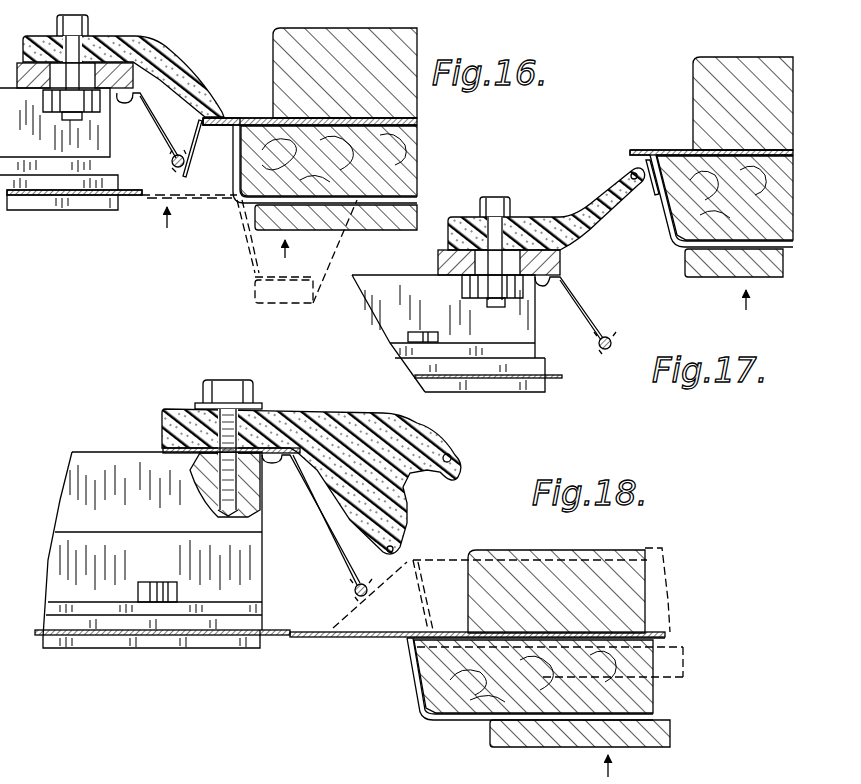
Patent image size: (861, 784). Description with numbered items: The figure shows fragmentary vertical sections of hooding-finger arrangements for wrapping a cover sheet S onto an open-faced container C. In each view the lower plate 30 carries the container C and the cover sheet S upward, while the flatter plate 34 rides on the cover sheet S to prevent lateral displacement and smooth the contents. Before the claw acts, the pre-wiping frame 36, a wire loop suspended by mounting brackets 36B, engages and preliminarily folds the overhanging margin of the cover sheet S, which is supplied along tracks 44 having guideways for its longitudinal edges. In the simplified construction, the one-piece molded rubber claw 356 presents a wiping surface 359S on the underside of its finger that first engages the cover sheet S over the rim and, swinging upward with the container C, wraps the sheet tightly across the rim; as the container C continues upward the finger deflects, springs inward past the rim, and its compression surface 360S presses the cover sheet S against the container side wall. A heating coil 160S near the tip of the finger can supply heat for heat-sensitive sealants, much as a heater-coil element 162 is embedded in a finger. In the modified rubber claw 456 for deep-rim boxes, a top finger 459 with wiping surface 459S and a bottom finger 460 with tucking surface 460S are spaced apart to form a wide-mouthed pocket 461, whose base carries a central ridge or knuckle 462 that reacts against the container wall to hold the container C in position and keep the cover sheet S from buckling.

In FIG. 16, the lower plate 30 is at (398, 236).
In FIG. 17, the lower plate 30 is at (712, 265).
In FIG. 18, the lower plate 30 is at (638, 745).
In FIG. 17, the flatter plate 34 is at (706, 78).
In FIG. 18, the flatter plate 34 is at (600, 580).
In FIG. 16, the pre-wiping frame 36 is at (172, 163).
In FIG. 17, the pre-wiping frame 36 is at (614, 340).
In FIG. 18, the pre-wiping frame 36 is at (353, 598).
In FIG. 17, the mounting brackets 36B is at (585, 292).
In FIG. 18, the mounting brackets 36B is at (313, 496).
In FIG. 16, the tracks 44 is at (35, 206).
In FIG. 17, the tracks 44 is at (508, 392).
In FIG. 18, the tracks 44 is at (180, 648).
In FIG. 16, the cover sheet S is at (155, 196).
In FIG. 17, the cover sheet S is at (555, 378).
In FIG. 18, the cover sheet S is at (298, 638).
In FIG. 16, the container C is at (237, 178).
In FIG. 17, the container C is at (665, 234).
In FIG. 16, the claw 356 is at (172, 42).
In FIG. 16, the heating coil 160S is at (208, 115).
In FIG. 17, the heating coil 160S is at (636, 172).
In FIG. 16, the compression surface 360S is at (230, 116).
In FIG. 17, the compression surface 360S is at (652, 150).
In FIG. 16, the wiping surface 359S is at (194, 132).
In FIG. 17, the wiping surface 359S is at (650, 196).
In FIG. 18, the modified claw 456 is at (332, 410).
In FIG. 18, the top hooding finger 459 is at (455, 440).
In FIG. 18, the wiping surface 459S is at (467, 478).
In FIG. 18, the bottom hooding finger 460 is at (370, 556).
In FIG. 18, the pressing or tucking surface 460S is at (404, 552).
In FIG. 18, the wide-mouthed pocket 461 is at (440, 494).
In FIG. 18, the central ridge or knuckle 462 is at (404, 494).
In FIG. 18, the electric resistance heater-coil element 162 is at (393, 547).